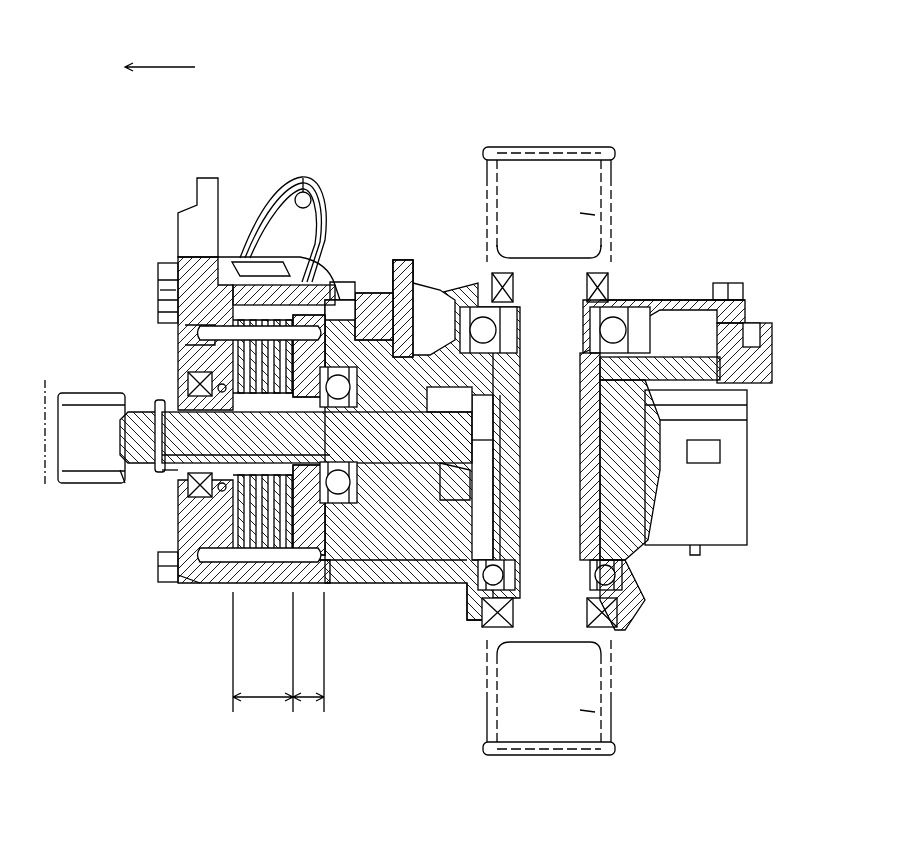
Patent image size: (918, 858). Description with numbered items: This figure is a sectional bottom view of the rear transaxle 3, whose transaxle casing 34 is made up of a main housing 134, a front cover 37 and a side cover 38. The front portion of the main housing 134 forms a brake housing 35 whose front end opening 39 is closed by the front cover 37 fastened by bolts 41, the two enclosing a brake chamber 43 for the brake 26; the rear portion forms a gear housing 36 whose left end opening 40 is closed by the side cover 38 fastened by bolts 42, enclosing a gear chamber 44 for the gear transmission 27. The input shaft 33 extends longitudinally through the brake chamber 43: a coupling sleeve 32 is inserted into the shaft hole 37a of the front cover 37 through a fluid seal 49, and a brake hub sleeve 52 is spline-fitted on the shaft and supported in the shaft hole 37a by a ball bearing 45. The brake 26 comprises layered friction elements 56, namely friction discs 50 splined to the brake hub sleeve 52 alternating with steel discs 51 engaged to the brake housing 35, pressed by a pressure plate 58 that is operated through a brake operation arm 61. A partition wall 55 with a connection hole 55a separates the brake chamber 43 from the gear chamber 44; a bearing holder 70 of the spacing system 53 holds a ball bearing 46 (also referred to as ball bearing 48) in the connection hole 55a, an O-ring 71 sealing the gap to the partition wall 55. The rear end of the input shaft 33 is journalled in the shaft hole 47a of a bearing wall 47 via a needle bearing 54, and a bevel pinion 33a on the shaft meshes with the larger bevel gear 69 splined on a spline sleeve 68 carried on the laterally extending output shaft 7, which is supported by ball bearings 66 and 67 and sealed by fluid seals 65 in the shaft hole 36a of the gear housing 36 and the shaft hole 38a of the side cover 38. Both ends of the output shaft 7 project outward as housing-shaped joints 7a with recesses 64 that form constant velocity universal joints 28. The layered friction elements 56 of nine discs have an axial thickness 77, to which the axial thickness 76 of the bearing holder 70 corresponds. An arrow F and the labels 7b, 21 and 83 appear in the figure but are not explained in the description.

The forward direction F is at (167, 66).
The rear transaxle 3 is at (708, 143).
The output shaft 7 is at (478, 214).
The housing-shaped joints 7a is at (485, 163).
The crank web 7b is at (485, 720).
The output shaft 21 is at (50, 393).
The brake 26 is at (205, 275).
The gear transmission 27 is at (413, 282).
The constant velocity universal joints 28 is at (626, 175).
The coupling sleeve 32 is at (88, 392).
The input shaft 33 is at (120, 435).
The bevel pinion 33a is at (470, 482).
The transaxle casing 34 is at (748, 300).
The brake housing 35 is at (265, 585).
The gear housing 36 is at (412, 578).
The shaft hole 36a is at (500, 572).
The front cover 37 is at (184, 203).
The shaft hole 37a is at (185, 350).
The side cover 38 is at (688, 290).
The shaft hole 38a is at (520, 332).
The front end opening 39 is at (215, 585).
The left end opening 40 is at (745, 330).
The bolts 41 is at (158, 268).
The bolts 42 is at (728, 282).
The brake chamber 43 is at (310, 580).
The gear chamber 44 is at (640, 548).
The ball bearing 45 is at (188, 490).
The ball bearing 46 is at (365, 565).
The bearing wall 47 is at (480, 606).
The shaft hole 47a is at (500, 427).
The ball bearing 48 is at (135, 470).
The fluid seal 49 is at (165, 478).
The friction discs 50 is at (172, 550).
The steel discs 51 is at (183, 583).
The brake hub sleeve 52 is at (188, 378).
The spacing system 53 is at (255, 258).
The needle bearing 54 is at (480, 452).
The partition wall 55 is at (348, 282).
The connection hole 55a is at (372, 296).
The layered friction elements 56 is at (240, 600).
The pressure plate 58 is at (160, 308).
The brake operation arm 61 is at (312, 178).
The recesses 64 is at (617, 213).
The fluid seal 65 is at (600, 282).
The ball bearing 66 is at (635, 310).
The ball bearing 67 is at (635, 600).
The spline sleeve 68 is at (690, 490).
The bevel gear 69 is at (725, 440).
The bearing holder 70 is at (347, 310).
The O-ring 71 is at (345, 583).
The axial thickness 76 is at (310, 703).
The axial thickness 77 is at (265, 703).
The nut flange 83 is at (115, 482).
The main housing 134 is at (372, 600).